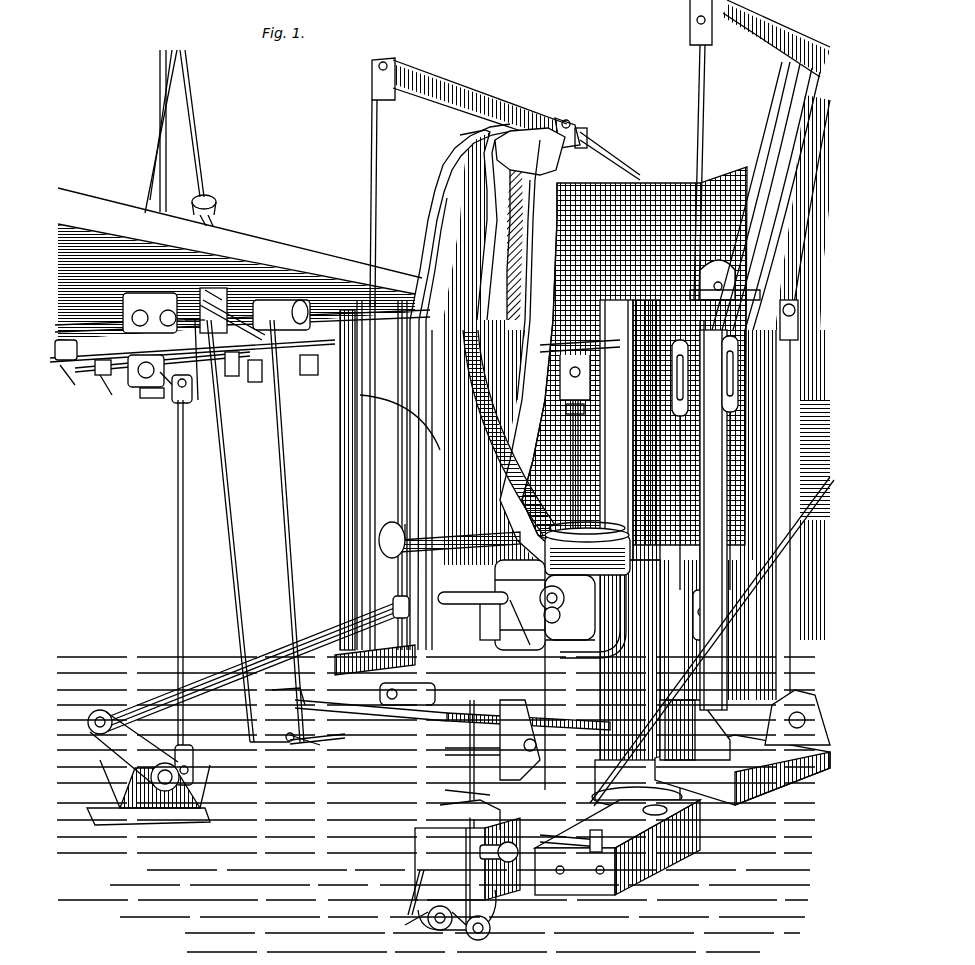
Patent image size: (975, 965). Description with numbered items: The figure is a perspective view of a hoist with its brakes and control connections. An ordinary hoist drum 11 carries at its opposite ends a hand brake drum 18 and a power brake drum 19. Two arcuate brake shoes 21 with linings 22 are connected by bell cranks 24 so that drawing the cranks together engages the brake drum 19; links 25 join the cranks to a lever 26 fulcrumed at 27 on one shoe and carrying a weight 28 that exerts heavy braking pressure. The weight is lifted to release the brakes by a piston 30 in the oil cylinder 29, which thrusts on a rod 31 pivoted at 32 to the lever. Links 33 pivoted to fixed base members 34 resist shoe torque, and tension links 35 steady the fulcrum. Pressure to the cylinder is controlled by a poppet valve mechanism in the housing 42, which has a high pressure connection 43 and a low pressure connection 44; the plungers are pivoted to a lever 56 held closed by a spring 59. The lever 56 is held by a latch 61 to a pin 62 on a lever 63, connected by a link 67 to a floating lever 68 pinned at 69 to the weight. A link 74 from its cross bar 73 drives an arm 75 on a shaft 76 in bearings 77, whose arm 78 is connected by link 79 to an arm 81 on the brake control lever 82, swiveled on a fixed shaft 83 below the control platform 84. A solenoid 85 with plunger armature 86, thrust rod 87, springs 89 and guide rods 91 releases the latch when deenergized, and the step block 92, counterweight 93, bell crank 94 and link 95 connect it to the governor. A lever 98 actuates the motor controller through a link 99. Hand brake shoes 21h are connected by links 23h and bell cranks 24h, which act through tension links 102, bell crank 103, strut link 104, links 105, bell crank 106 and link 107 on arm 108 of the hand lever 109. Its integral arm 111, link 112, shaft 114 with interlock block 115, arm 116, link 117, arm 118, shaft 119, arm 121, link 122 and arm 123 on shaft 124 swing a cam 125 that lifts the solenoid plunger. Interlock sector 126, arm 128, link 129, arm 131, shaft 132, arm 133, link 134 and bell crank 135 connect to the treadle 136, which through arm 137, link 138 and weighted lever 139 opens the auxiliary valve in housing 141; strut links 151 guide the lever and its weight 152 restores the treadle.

The hoist drum 11 is at (655, 180).
The hand brake drum 18 is at (537, 352).
The power brake drum 19 is at (825, 230).
The brake shoes 21 is at (765, 196).
The brake shoes 21h is at (470, 222).
The brake linings 22 is at (800, 258).
The links 23h is at (598, 160).
The bell cranks 24 is at (765, 22).
The bell cranks 24h is at (452, 80).
The links 25 is at (706, 108).
The lever 26 is at (725, 295).
The fulcrum 27 is at (740, 305).
The weight 28 is at (630, 430).
The oil cylinder 29 is at (617, 727).
The piston 30 is at (600, 536).
The rod 31 is at (582, 484).
The pivot 32 is at (592, 365).
The links 33 is at (455, 416).
The base members 34 is at (742, 747).
The tension links 35 is at (420, 480).
The housing 42 is at (520, 605).
The high pressure connection 43 is at (564, 614).
The low pressure connection 44 is at (561, 598).
The lever 56 is at (545, 660).
The spring 59 is at (570, 607).
The latch 61 is at (487, 620).
The pin 62 is at (516, 622).
The lever 63 is at (450, 592).
The link 67 is at (407, 694).
The floating lever 68 is at (600, 720).
The pin 69 is at (695, 738).
The cross bar 73 is at (535, 712).
The link 74 is at (528, 735).
The arm 75 is at (536, 748).
The shaft 76 is at (371, 717).
The bearings 77 is at (290, 732).
The arm 78 is at (287, 684).
The link 79 is at (288, 506).
The arm 81 is at (262, 300).
The brake control lever 82 is at (189, 138).
The fixed shaft 83 is at (175, 381).
The control platform 84 is at (285, 252).
The solenoid 85 is at (467, 859).
The plunger armature 86 is at (495, 890).
The thrust rod 87 is at (445, 745).
The springs 89 is at (445, 794).
The guide rods 91 is at (455, 876).
The step block 92 is at (440, 808).
The counterweight 93 is at (515, 855).
The bell crank 94 is at (572, 846).
The link 95 is at (678, 672).
The lever 98 is at (160, 76).
The link 99 is at (145, 400).
The tension links 102 is at (380, 151).
The bell crank 103 is at (380, 622).
The strut link 104 is at (363, 658).
The links 105 is at (215, 662).
The bell crank 106 is at (120, 740).
The link 107 is at (178, 602).
The arm 108 is at (172, 402).
The hand lever 109 is at (152, 160).
The arm 111 is at (105, 395).
The link 112 is at (70, 400).
The shaft 114 is at (177, 300).
The interlock block 115 is at (80, 372).
The arm 116 is at (212, 290).
The link 117 is at (236, 546).
The arm 118 is at (270, 745).
The shaft 119 is at (325, 742).
The arm 121 is at (472, 747).
The link 122 is at (418, 880).
The arm 123 is at (440, 925).
The shaft 124 is at (485, 930).
The cam 125 is at (458, 928).
The interlock sector 126 is at (60, 365).
The arm 128 is at (100, 378).
The link 129 is at (198, 402).
The arm 131 is at (255, 383).
The shaft 132 is at (285, 346).
The arm 133 is at (308, 376).
The link 134 is at (275, 368).
The bell crank 135 is at (230, 378).
The treadle 136 is at (216, 212).
The arm 137 is at (402, 300).
The link 138 is at (440, 445).
The weighted lever 139 is at (378, 544).
The auxiliary admission valve housing 141 is at (450, 530).
The strut links 151 is at (590, 523).
The weight 152 is at (380, 530).